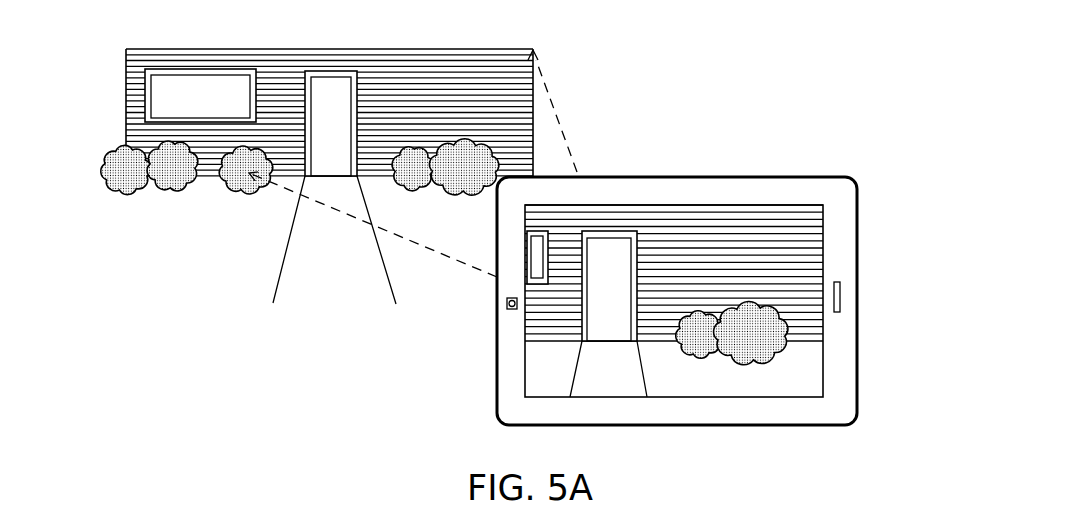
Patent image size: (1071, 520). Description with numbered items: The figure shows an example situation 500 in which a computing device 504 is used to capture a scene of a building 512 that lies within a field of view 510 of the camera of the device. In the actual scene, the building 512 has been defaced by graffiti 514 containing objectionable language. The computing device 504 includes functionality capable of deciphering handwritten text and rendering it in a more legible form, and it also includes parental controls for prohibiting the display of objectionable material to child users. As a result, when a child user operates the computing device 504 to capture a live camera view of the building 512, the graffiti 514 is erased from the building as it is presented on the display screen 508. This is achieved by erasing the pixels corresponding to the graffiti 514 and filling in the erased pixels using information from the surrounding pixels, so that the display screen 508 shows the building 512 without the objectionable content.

The example situation 500 is at (505, 252).
The computing device 504 is at (677, 300).
The display screen 508 is at (733, 397).
The field of view 510 is at (467, 266).
The building 512 is at (203, 186).
The graffiti 514 is at (505, 107).